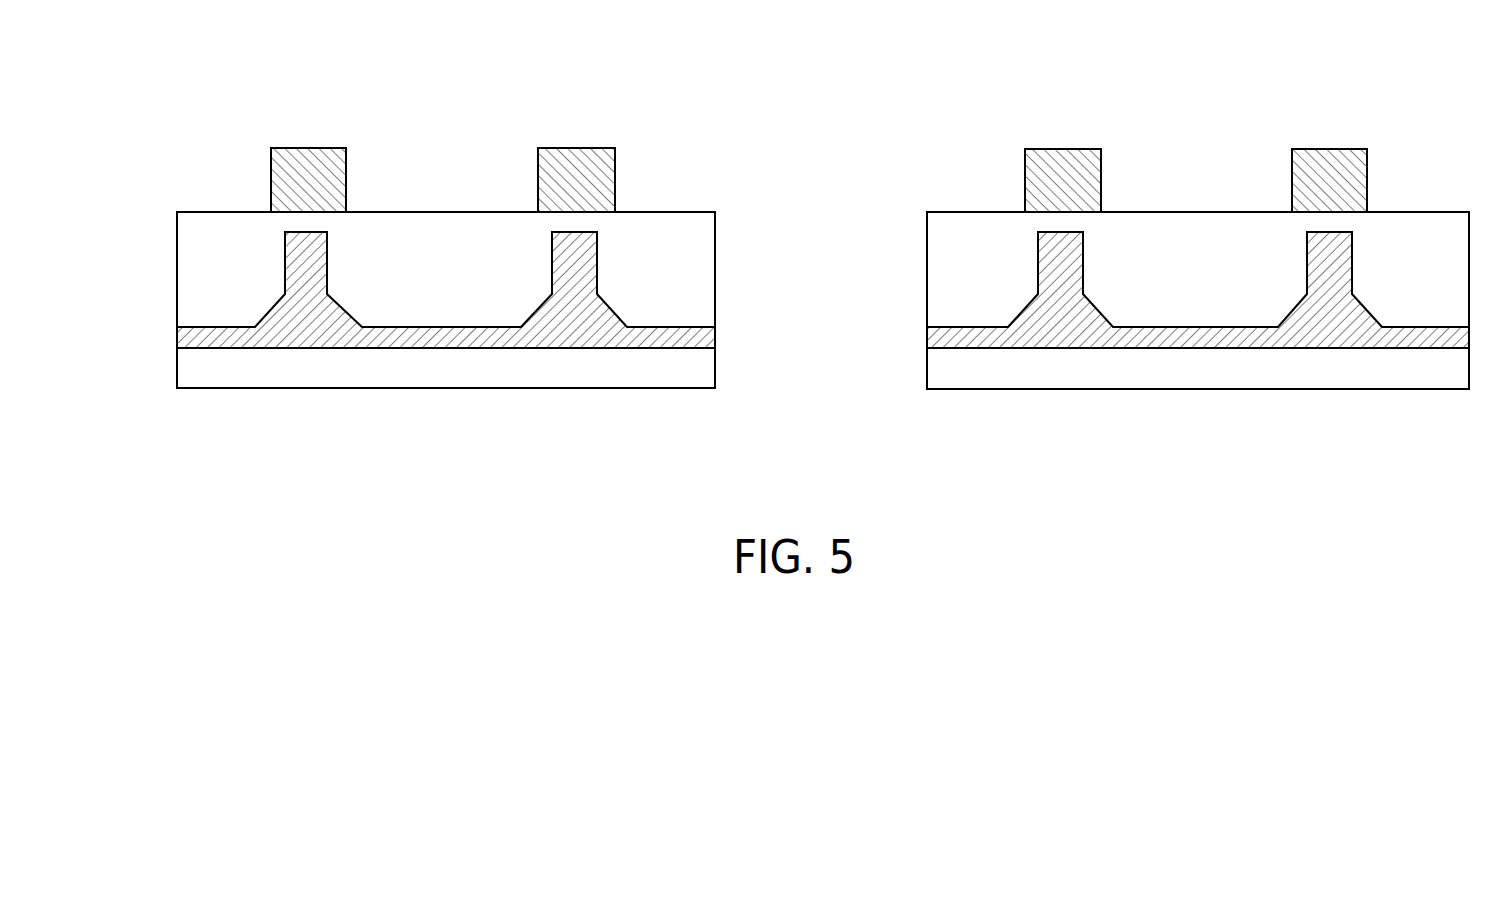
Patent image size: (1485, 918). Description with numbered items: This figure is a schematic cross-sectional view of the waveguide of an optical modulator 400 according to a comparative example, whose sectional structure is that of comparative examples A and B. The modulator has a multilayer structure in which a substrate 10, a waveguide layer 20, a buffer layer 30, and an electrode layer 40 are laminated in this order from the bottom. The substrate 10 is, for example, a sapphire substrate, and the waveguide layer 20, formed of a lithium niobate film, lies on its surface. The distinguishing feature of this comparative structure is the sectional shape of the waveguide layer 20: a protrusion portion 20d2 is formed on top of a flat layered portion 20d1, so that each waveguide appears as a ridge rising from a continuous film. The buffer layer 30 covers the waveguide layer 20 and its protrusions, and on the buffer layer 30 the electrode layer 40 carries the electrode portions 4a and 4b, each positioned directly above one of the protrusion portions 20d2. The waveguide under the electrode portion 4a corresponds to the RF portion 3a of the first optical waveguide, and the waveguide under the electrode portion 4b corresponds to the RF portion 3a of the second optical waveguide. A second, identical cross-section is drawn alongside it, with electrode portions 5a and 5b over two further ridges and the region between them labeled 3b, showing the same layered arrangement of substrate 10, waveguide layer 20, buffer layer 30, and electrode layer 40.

The optical modulator 400 is at (181, 70).
The electrode layer 40 is at (665, 182).
The substrate 10 is at (690, 373).
The waveguide layer 20 is at (683, 337).
The layered portion 20d1 is at (202, 340).
The protrusion portion 20d2 is at (307, 270).
The buffer layer 30 is at (673, 258).
The electrode portion 4a is at (307, 148).
The electrode portion 4b is at (583, 148).
The RF portion 3a is at (450, 198).
The third gate electrode 5a is at (1067, 148).
The fourth gate electrode 5b is at (1327, 148).
The region between gates 3b is at (1177, 192).